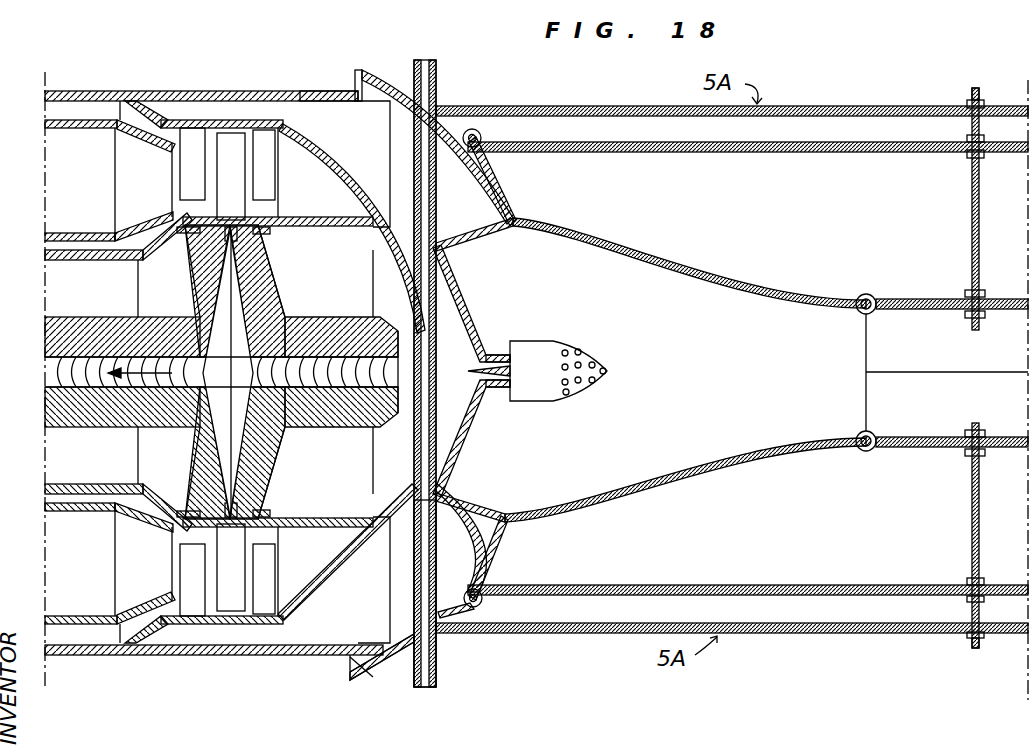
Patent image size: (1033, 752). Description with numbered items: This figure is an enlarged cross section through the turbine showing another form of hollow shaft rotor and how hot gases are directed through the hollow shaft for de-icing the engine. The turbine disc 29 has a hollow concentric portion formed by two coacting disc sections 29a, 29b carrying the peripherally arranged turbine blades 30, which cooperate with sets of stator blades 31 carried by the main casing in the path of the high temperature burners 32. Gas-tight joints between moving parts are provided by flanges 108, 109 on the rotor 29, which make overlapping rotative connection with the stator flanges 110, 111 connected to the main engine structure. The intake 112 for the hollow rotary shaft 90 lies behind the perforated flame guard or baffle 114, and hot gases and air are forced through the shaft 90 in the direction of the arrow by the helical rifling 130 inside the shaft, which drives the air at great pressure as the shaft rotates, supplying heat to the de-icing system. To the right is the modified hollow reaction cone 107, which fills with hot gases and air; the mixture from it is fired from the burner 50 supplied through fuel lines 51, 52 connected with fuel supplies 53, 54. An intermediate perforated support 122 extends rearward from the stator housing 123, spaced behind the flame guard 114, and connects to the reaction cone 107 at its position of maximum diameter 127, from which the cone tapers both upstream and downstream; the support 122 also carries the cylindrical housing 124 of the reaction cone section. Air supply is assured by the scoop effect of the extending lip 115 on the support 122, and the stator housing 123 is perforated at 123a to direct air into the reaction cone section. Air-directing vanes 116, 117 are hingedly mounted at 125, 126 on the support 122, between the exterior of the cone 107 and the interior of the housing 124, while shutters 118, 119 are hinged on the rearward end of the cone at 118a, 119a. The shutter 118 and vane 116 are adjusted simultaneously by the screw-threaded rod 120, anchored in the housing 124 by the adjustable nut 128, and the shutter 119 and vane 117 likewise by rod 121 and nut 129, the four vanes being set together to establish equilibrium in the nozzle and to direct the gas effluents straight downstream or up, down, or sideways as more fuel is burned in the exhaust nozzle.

The stator housing 123 is at (177, 90).
The perforation in stator housing 123a is at (303, 90).
The extending lip 115 is at (365, 72).
The fuel supply 53 is at (436, 63).
The fuel supply 54 is at (427, 670).
The cylindrical housing 124 is at (598, 106).
The air-directing vane 116 is at (725, 152).
The air-directing vane 117 is at (733, 585).
The hinged mounting 125 is at (467, 130).
The hinged mounting 126 is at (477, 590).
The intermediate perforated support 122 is at (488, 187).
The position of support 127 is at (514, 224).
The reaction cone 107 is at (574, 252).
The perforated flame guard 114 is at (438, 302).
The fuel line 51 is at (498, 353).
The fuel line 52 is at (497, 390).
The burner 50 is at (550, 360).
The hinged connection 118a is at (860, 295).
The shutter 118 is at (953, 299).
The shutter 119 is at (950, 440).
The hinged connection 119a is at (860, 451).
The screw-threaded adjusting rod 120 is at (973, 190).
The screw-threaded adjustable rod 121 is at (970, 510).
The adjustable nut 128 is at (972, 93).
The screw-threaded nut 129 is at (973, 643).
The stator flange 111 is at (384, 197).
The rotor flange 109 is at (267, 217).
The stator blades 31 is at (197, 147).
The turbine blades 30 is at (232, 143).
The high temperature burners 32 is at (135, 172).
The stator flange 110 is at (187, 210).
The rotor flange 108 is at (137, 257).
The hollow rotary shaft 90 is at (45, 338).
The intake 112 is at (330, 385).
The turbine disc 29 is at (250, 310).
The disc section 29a is at (200, 283).
The disc section 29b is at (275, 262).
The helical rifling 130 is at (62, 378).